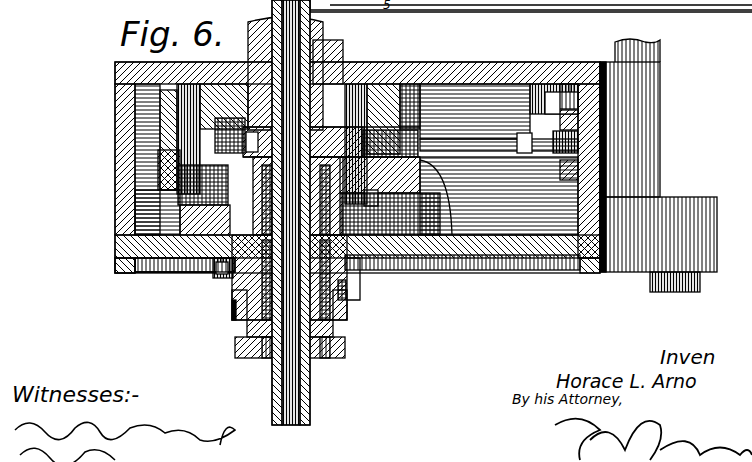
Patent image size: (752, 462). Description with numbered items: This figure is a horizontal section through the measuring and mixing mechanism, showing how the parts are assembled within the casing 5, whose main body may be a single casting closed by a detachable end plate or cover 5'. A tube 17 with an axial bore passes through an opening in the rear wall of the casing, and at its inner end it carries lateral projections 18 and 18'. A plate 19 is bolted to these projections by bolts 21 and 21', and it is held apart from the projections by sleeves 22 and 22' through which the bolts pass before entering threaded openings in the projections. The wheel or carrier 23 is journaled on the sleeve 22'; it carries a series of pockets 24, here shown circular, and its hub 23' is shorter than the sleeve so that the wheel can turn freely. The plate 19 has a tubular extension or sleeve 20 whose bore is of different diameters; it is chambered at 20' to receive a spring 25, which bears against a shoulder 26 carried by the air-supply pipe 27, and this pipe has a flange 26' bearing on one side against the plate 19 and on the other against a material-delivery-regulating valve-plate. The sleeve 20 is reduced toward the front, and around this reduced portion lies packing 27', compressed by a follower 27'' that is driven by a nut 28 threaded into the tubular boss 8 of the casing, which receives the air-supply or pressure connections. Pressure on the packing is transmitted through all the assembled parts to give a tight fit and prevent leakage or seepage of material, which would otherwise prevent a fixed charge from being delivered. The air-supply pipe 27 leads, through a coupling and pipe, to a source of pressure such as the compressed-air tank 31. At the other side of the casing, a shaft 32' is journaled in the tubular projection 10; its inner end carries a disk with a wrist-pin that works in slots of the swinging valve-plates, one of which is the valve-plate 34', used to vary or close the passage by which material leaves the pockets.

The casing 5 is at (343, 167).
The detachable end plate 5' is at (574, 196).
The tubular boss 8 is at (232, 322).
The tubular projection 10 is at (648, 42).
The tube 17 is at (316, 50).
The lateral projection 18 is at (224, 86).
The lateral projection 18' is at (366, 119).
The plate 19 is at (145, 186).
The tubular extension 20 is at (258, 286).
The chamber 20' is at (206, 305).
The bolt 21 is at (126, 140).
The bolt 21' is at (475, 87).
The sleeve 22 is at (111, 159).
The sleeve 22' is at (499, 97).
The wheel or carrier 23 is at (499, 192).
The hub 23' is at (411, 197).
The pocket 24 is at (288, 135).
The spring 25 is at (356, 165).
The shoulder 26 is at (185, 281).
The flange 26' is at (124, 287).
The air-supply pipe 27 is at (306, 212).
The packing 27' is at (369, 279).
The follower 27'' is at (379, 294).
The nut 28 is at (236, 352).
The compressed-air tank 31 is at (175, 230).
The shaft 32' is at (591, 94).
The valve-plate 34' is at (231, 88).